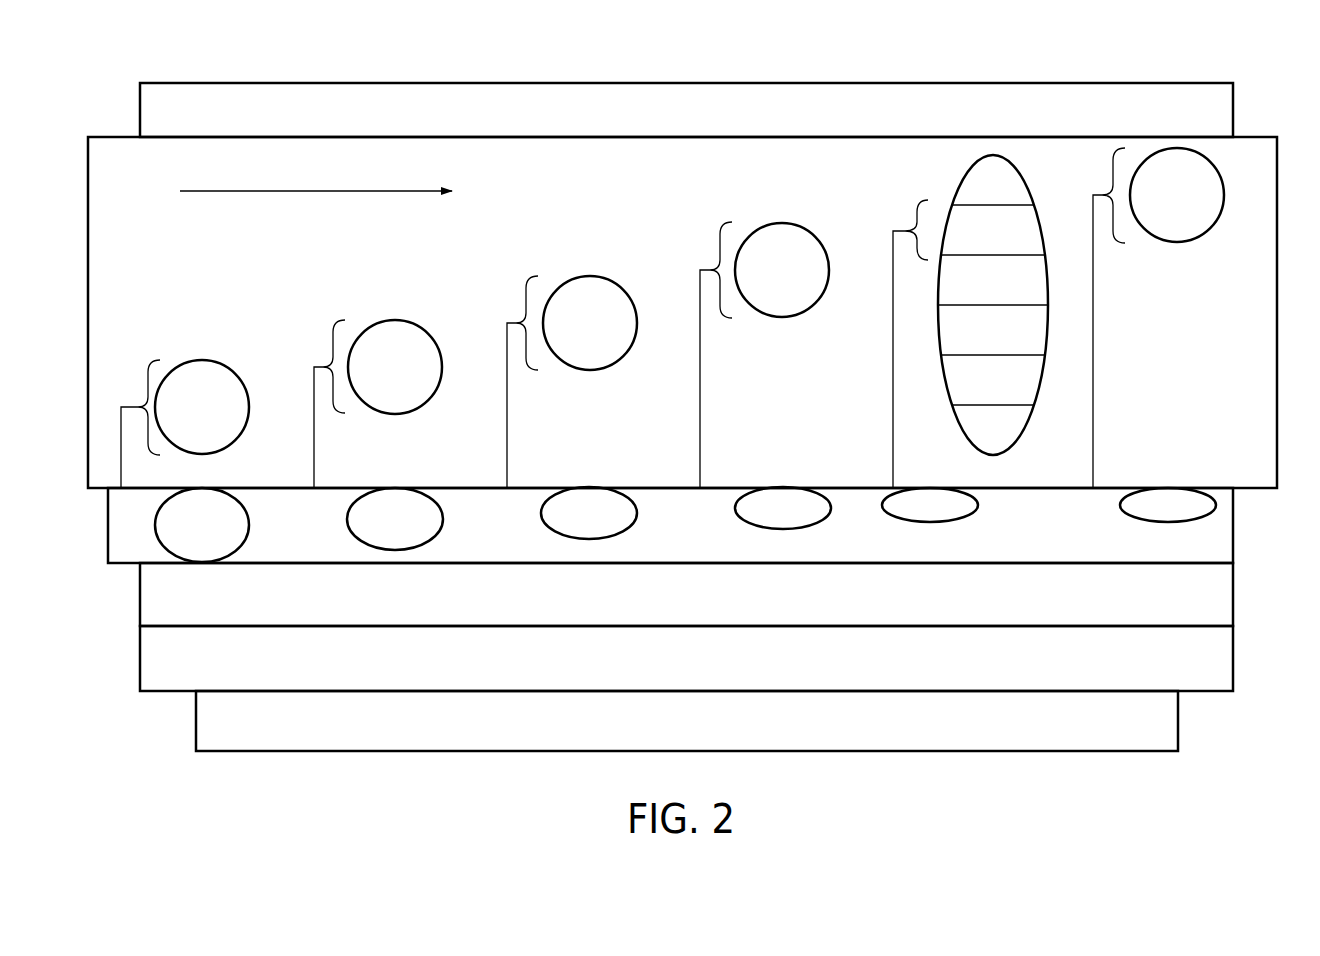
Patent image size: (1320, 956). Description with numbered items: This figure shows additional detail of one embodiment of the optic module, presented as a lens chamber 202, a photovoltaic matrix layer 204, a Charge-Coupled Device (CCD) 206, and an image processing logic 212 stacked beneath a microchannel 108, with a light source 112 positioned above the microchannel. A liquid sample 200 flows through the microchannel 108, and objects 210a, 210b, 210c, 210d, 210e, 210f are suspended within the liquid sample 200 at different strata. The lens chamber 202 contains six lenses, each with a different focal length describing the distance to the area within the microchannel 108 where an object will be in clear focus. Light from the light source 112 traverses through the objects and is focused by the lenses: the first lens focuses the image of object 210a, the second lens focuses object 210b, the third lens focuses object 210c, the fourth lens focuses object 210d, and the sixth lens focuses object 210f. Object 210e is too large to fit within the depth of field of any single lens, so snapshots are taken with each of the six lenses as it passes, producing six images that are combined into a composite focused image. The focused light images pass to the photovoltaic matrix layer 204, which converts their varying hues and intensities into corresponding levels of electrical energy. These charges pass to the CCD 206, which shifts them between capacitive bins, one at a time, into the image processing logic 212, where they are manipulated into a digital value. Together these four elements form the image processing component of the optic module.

The light source 112 is at (667, 83).
The microchannel 108 is at (560, 137).
The liquid sample 200 is at (306, 211).
The object 210a is at (185, 424).
The object 210b is at (378, 404).
The object 210c is at (572, 382).
The object 210d is at (764, 355).
The object 210e is at (932, 183).
The object 210f is at (1158, 318).
The lens chamber 202 is at (1233, 540).
The photovoltaic matrix layer 204 is at (1233, 590).
The Charge-Coupled Device (CCD) 206 is at (1233, 653).
The image processing logic 212 is at (1178, 720).